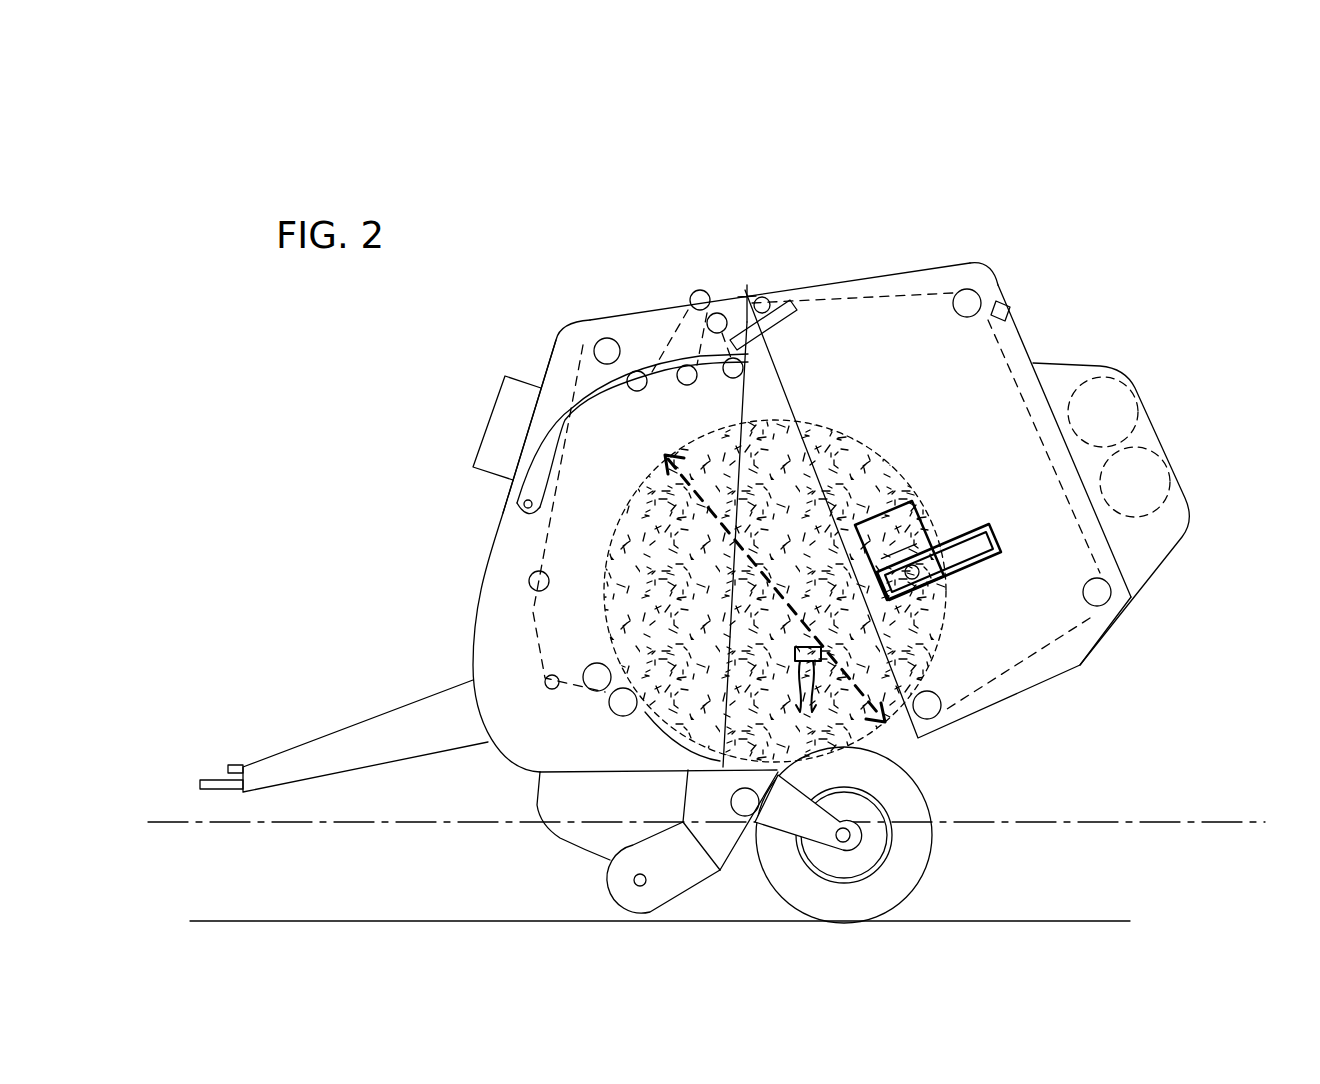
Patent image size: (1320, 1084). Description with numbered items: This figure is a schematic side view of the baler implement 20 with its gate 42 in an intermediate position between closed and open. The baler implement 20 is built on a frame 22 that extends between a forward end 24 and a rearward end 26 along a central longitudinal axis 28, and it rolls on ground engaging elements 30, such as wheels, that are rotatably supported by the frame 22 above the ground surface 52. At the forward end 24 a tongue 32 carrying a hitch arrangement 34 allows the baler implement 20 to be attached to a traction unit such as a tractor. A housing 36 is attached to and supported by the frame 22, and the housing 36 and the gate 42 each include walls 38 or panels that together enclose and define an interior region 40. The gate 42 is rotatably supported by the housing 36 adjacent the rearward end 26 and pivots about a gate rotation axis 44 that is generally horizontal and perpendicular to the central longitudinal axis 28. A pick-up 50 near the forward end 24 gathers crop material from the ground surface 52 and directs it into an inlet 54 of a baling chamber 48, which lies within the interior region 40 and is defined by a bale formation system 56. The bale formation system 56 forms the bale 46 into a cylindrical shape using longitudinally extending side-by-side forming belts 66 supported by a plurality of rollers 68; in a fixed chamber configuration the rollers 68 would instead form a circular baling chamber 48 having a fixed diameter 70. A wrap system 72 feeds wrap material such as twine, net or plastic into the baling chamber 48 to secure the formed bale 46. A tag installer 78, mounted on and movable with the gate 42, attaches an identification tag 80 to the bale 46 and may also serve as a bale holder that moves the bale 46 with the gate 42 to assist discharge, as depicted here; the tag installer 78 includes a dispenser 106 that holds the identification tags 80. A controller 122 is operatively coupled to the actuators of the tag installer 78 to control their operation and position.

The baler implement 20 is at (820, 92).
The frame 22 is at (720, 828).
The forward end 24 is at (470, 637).
The rearward end 26 is at (1140, 603).
The central longitudinal axis 28 is at (185, 823).
The ground engaging elements 30 is at (897, 883).
The tongue 32 is at (330, 745).
The hitch arrangement 34 is at (215, 772).
The housing 36 is at (643, 312).
The walls 38 is at (503, 520).
The interior region 40 is at (912, 318).
The gate 42 is at (982, 264).
The gate rotation axis 44 is at (737, 297).
The bale 46 is at (716, 470).
The baling chamber 48 is at (888, 467).
The pick-up 50 is at (620, 897).
The ground surface 52 is at (1098, 920).
The inlet 54 is at (657, 713).
The bale formation system 56 is at (570, 393).
The forming belts 66 is at (1015, 353).
The rollers 68 is at (607, 352).
The fixed diameter 70 is at (775, 588).
The wrap system 72 is at (1160, 430).
The tag installer 78 is at (963, 520).
The identification tag 80 is at (823, 647).
The dispenser 106 is at (899, 550).
The controller 122 is at (508, 415).